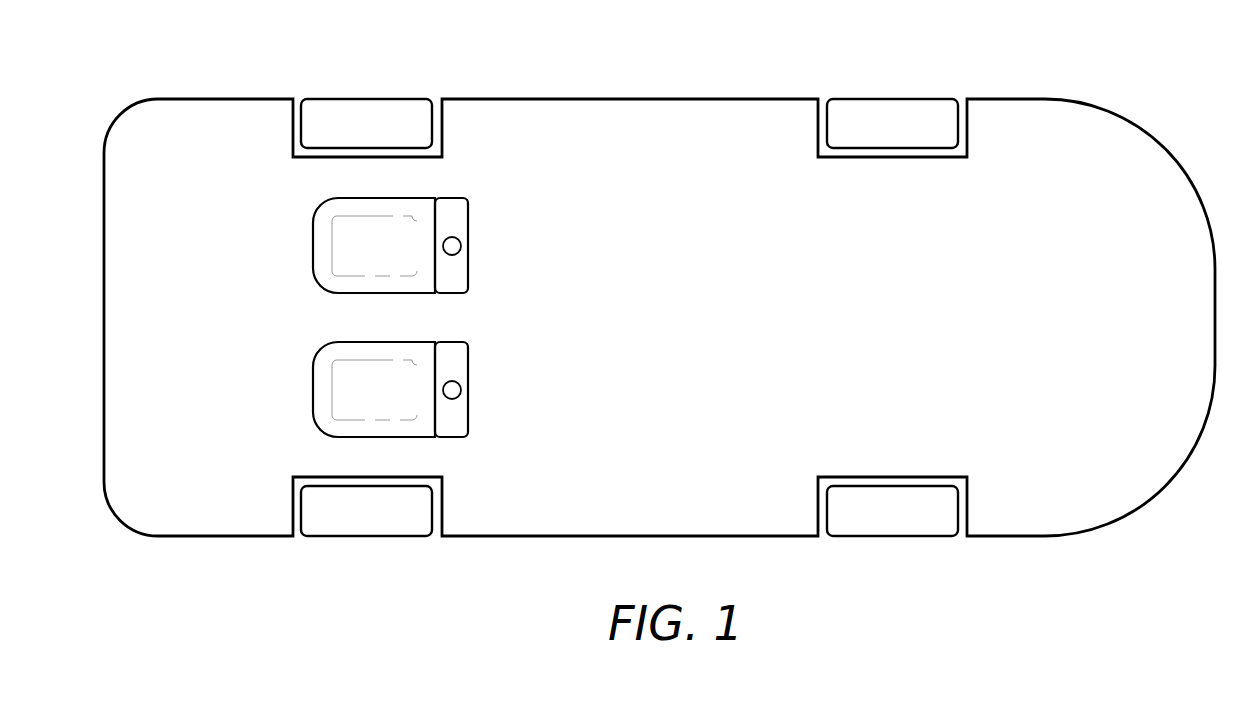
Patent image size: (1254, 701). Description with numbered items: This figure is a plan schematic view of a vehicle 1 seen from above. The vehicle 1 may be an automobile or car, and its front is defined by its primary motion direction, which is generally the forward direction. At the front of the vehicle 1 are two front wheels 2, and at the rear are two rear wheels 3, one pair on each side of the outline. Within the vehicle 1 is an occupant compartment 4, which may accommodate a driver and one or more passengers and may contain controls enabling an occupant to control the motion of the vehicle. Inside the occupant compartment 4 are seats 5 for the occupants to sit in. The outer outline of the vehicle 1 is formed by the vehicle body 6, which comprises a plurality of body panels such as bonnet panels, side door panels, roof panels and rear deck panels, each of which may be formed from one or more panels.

The vehicle 1 is at (668, 311).
The front wheels 2 is at (367, 99).
The rear wheels 3 is at (893, 99).
The occupant compartment 4 is at (489, 472).
The seats 5 is at (313, 246).
The vehicle body 6 is at (1190, 455).